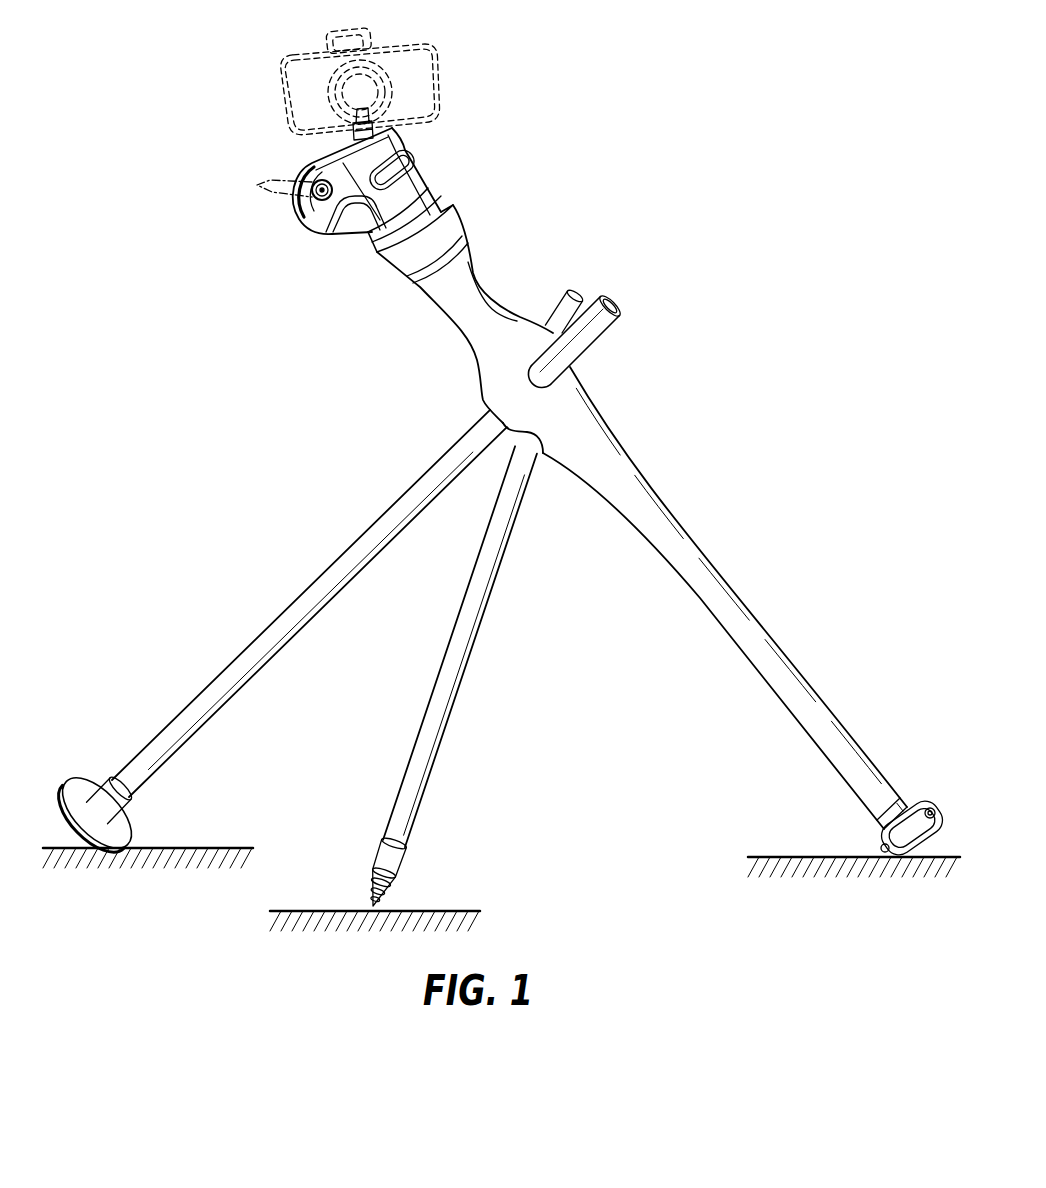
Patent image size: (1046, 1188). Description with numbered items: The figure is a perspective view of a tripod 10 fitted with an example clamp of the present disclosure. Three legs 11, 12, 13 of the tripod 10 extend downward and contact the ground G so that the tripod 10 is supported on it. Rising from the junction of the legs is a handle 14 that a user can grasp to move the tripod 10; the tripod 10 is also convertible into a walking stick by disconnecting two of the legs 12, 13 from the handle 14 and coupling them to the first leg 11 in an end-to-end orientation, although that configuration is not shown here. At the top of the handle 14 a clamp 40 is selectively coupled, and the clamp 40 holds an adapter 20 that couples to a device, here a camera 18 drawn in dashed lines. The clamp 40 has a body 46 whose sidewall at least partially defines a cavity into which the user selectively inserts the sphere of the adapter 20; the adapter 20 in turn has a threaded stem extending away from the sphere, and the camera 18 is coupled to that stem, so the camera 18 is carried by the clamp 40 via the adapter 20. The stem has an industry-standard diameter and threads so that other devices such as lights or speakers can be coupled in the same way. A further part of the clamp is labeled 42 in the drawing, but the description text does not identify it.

The tripod 10 is at (752, 372).
The first leg 11 is at (823, 730).
The leg 12 is at (213, 697).
The leg 13 is at (418, 763).
The handle 14 is at (462, 292).
The camera 18 is at (438, 62).
The adapter 20 is at (296, 152).
The clamp 40 is at (300, 254).
The lever 42 is at (253, 188).
The body 46 is at (403, 178).
The ground G is at (183, 848).